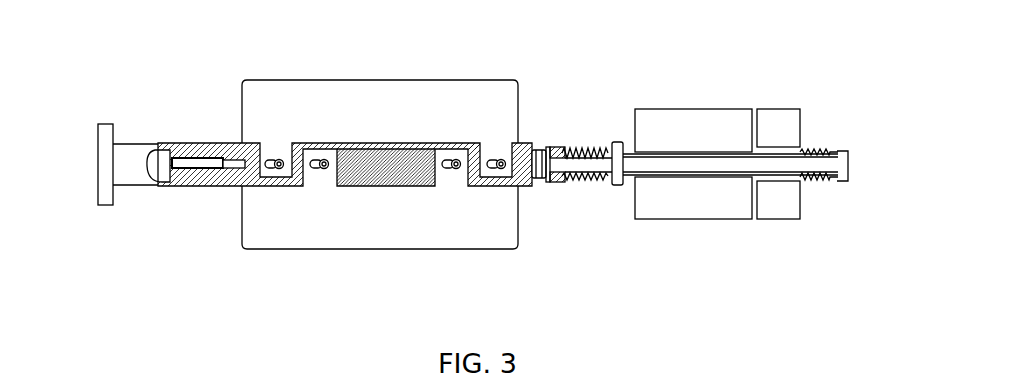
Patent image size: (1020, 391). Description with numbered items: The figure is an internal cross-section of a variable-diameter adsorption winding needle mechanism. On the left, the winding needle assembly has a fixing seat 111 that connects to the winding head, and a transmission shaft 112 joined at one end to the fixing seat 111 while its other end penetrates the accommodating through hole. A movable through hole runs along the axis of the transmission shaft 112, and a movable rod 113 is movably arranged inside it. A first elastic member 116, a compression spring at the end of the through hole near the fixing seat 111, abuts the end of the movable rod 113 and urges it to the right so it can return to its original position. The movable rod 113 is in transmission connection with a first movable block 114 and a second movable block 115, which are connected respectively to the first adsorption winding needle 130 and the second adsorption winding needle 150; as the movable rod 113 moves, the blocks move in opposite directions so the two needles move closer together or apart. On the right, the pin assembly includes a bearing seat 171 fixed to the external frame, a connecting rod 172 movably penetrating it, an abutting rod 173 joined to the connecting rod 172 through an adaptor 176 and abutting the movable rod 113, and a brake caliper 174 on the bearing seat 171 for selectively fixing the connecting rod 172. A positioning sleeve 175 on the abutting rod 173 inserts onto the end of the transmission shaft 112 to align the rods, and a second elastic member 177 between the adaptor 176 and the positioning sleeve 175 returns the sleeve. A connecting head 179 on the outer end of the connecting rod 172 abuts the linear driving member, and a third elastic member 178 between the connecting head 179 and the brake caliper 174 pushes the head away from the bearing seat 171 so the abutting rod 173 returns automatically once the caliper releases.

The fixing seat 111 is at (105, 123).
The transmission shaft 112 is at (228, 186).
The movable rod 113 is at (237, 145).
The first movable block 114 is at (285, 152).
The second movable block 115 is at (320, 186).
The first elastic member 116 is at (187, 147).
The first adsorption winding needle 130 is at (415, 80).
The second adsorption winding needle 150 is at (415, 250).
The bearing seat 171 is at (710, 140).
The connecting rod 172 is at (801, 162).
The abutting rod 173 is at (563, 185).
The brake caliper 174 is at (777, 210).
The positioning sleeve 175 is at (562, 148).
The adaptor 176 is at (615, 185).
The second elastic member 177 is at (604, 150).
The third elastic member 178 is at (815, 181).
The connecting head 179 is at (847, 152).